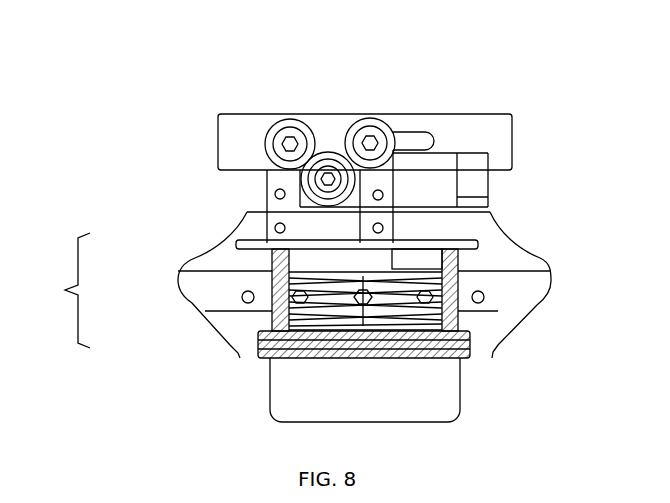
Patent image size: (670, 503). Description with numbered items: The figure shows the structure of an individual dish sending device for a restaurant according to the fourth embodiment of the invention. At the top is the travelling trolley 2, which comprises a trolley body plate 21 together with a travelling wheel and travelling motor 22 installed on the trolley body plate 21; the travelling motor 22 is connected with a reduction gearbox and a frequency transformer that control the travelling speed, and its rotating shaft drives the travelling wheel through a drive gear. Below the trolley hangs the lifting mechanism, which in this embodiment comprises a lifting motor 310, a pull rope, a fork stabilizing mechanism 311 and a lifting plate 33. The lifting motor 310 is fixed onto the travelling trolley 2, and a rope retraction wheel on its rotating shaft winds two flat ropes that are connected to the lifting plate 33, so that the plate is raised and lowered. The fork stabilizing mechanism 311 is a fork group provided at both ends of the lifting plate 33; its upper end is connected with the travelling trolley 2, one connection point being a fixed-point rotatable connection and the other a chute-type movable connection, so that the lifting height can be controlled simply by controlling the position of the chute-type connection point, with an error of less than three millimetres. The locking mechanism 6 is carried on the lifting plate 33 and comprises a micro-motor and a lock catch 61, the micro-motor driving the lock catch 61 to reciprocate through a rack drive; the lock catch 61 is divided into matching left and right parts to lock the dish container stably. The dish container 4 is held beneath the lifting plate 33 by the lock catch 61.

The travelling trolley 2 is at (100, 1).
The trolley body plate 21 is at (238, 147).
The travelling wheel and travelling motor 22 is at (282, 118).
The lifting motor 310 is at (300, 196).
The fork stabilizing mechanism 311 is at (277, 288).
The lifting plate 33 is at (260, 352).
The locking mechanism 6 is at (473, 335).
The lock catch 61 is at (616, 376).
The base block 4 is at (425, 373).